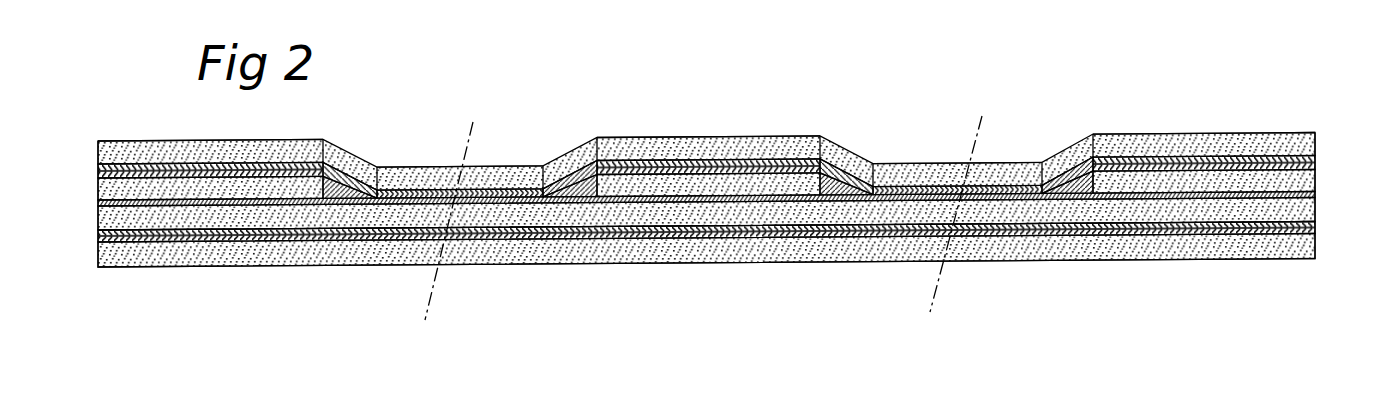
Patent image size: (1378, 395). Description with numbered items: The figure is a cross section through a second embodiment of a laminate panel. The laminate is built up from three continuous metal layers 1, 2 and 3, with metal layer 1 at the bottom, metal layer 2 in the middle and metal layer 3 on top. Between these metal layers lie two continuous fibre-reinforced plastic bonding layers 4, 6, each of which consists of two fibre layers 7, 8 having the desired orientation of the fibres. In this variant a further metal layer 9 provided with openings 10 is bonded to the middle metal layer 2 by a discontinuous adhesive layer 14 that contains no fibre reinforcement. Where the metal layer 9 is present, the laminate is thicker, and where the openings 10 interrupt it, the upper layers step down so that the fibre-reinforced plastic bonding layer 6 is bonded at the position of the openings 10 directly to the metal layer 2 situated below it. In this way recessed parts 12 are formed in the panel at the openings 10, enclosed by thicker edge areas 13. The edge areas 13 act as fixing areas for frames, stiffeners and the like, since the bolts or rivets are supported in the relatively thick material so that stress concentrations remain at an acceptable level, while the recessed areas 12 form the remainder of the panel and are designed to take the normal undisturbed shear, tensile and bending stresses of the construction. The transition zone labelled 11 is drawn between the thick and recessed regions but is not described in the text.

The continuous metal layer 1 is at (1280, 247).
The continuous metal layer 2 is at (1307, 212).
The continuous metal layer 3 is at (1295, 145).
The fibre-reinforced plastic bonding layer 4 is at (1315, 232).
The fibre-reinforced plastic bonding layer 6 is at (1317, 160).
The fibre layer 7 is at (1163, 228).
The fibre layer 8 is at (1143, 228).
The metal layer provided with openings 9 is at (1305, 178).
The opening 10 is at (1063, 170).
The filler 11 is at (1088, 172).
The recessed part 12 is at (486, 156).
The thicker edge area 13 is at (191, 134).
The discontinuous adhesive layer 14 is at (1315, 193).